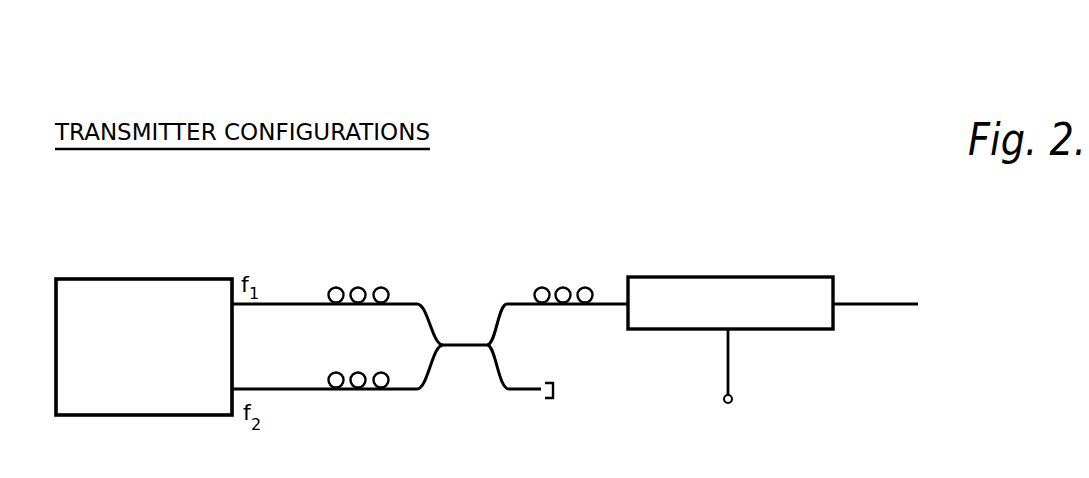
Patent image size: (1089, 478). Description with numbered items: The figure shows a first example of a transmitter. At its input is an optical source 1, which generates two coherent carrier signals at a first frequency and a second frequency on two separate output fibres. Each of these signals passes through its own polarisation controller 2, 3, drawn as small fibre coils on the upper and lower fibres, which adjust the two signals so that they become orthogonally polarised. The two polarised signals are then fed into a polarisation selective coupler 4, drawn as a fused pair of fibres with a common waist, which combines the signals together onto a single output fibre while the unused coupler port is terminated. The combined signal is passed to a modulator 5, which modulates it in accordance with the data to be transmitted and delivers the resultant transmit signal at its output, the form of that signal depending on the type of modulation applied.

The optical source 1 is at (73, 279).
The polarisation controller 2 is at (357, 284).
The polarisation controller 3 is at (357, 369).
The polarisation selective coupler 4 is at (467, 349).
The modulator 5 is at (797, 277).